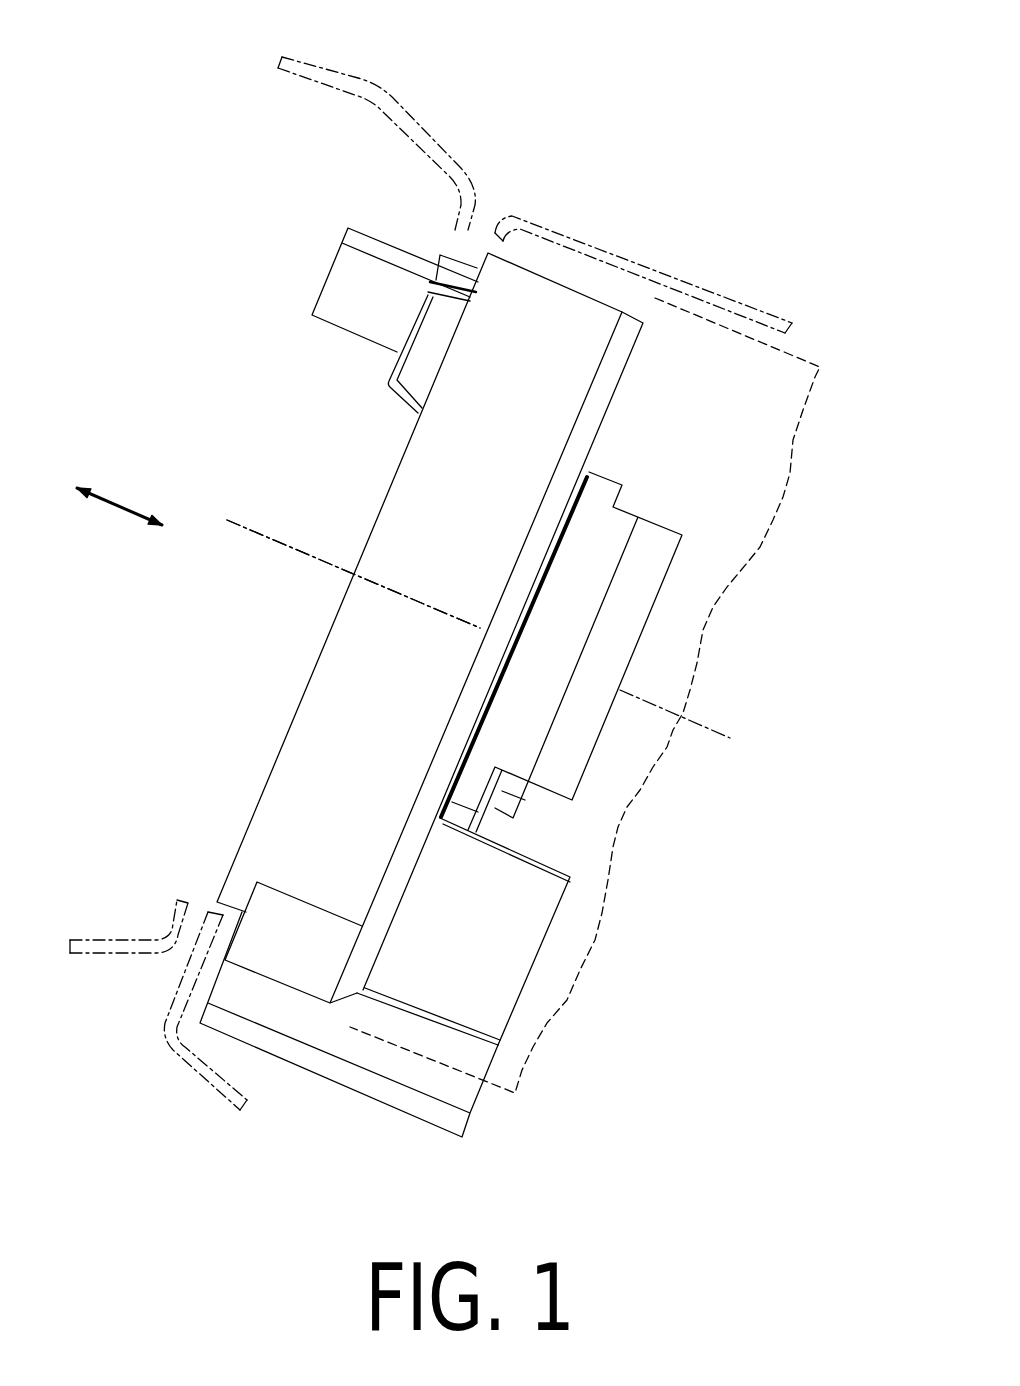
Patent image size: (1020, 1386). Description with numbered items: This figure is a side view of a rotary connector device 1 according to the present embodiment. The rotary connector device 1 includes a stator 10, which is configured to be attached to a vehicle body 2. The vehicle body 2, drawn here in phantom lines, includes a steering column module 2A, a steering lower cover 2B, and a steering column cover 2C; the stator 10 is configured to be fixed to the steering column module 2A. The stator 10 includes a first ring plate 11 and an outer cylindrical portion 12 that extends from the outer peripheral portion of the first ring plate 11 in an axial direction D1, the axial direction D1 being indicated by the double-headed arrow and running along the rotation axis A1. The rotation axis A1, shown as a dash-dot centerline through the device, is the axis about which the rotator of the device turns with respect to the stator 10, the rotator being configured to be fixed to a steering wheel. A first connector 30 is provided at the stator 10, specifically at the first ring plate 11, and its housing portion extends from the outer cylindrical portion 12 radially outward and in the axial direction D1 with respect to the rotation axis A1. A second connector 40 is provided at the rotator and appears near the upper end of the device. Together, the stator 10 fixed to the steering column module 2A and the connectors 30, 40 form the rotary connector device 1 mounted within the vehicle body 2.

The rotary connector device 1 is at (502, 691).
The stator 10 is at (502, 649).
The first ring plate 11 is at (592, 423).
The outer cylindrical portion 12 is at (323, 715).
The first connector 30 is at (358, 1106).
The second connector 40 is at (314, 247).
The vehicle body 2 is at (474, 557).
The steering column module 2A is at (803, 357).
The steering lower cover 2B is at (360, 80).
The steering column cover 2C is at (598, 234).
The rotation axis A1 is at (237, 522).
The axial direction D1 is at (120, 513).